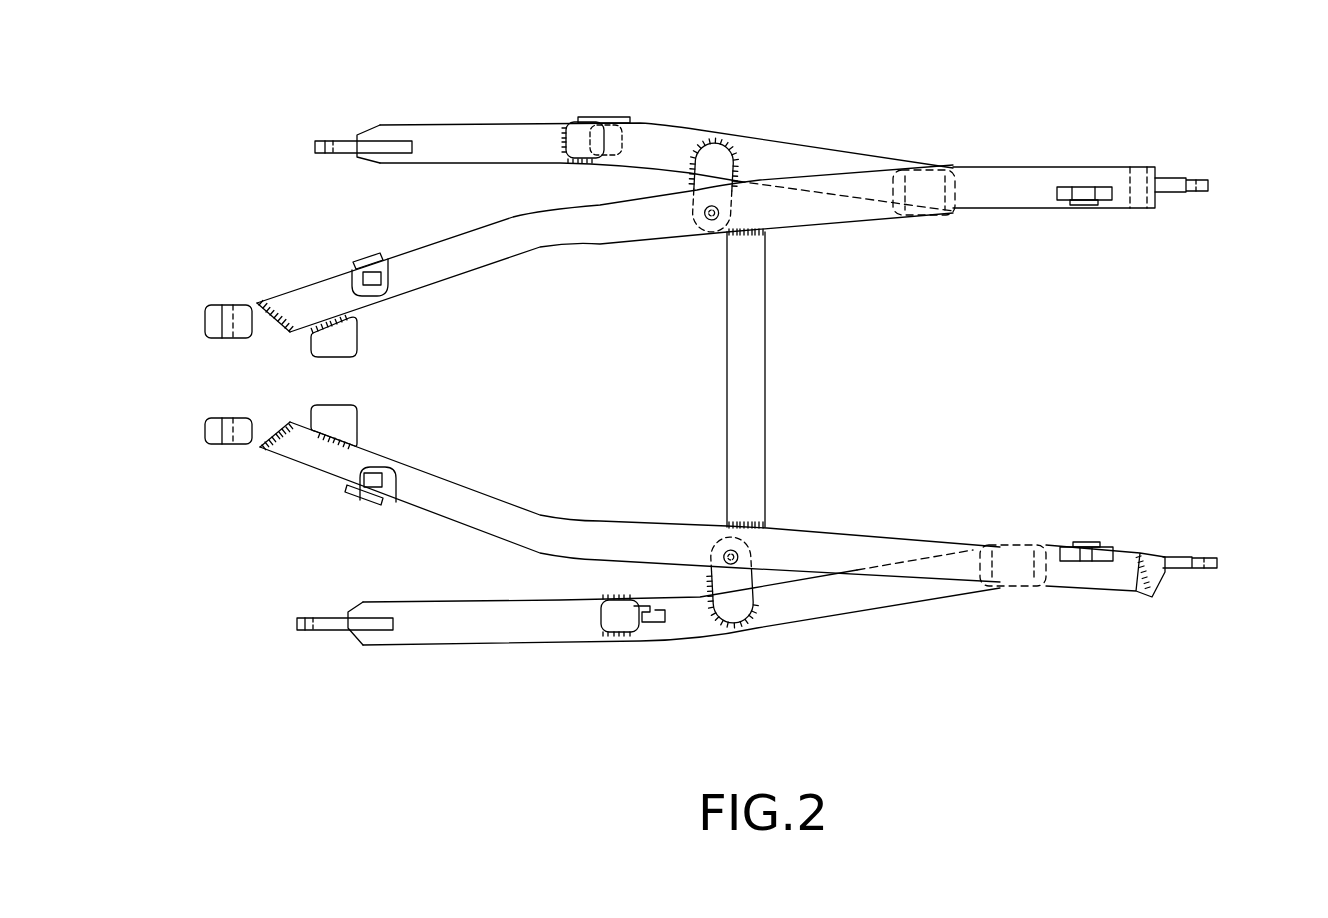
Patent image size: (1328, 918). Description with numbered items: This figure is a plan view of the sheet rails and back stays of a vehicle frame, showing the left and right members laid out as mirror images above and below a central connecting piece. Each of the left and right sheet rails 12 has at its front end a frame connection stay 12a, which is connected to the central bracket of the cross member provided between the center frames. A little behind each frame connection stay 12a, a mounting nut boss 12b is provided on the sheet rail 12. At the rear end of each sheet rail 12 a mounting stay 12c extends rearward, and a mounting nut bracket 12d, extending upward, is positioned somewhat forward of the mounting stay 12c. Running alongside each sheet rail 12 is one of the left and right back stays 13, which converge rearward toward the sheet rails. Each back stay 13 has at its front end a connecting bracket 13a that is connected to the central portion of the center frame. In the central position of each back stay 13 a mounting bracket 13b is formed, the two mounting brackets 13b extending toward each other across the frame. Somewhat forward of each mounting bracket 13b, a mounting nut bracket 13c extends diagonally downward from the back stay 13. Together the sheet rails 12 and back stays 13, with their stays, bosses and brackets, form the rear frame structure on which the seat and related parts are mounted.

The sheet rail 12 is at (600, 247).
The frame connection stay 12a is at (205, 322).
The mounting nut boss 12b is at (370, 263).
The mounting stay 12c is at (1210, 185).
The mounting nut bracket 12d is at (1083, 187).
The back stay 13 is at (692, 125).
The connecting bracket 13a is at (316, 147).
The mounting bracket 13b is at (695, 182).
The mounting nut bracket 13c is at (612, 118).